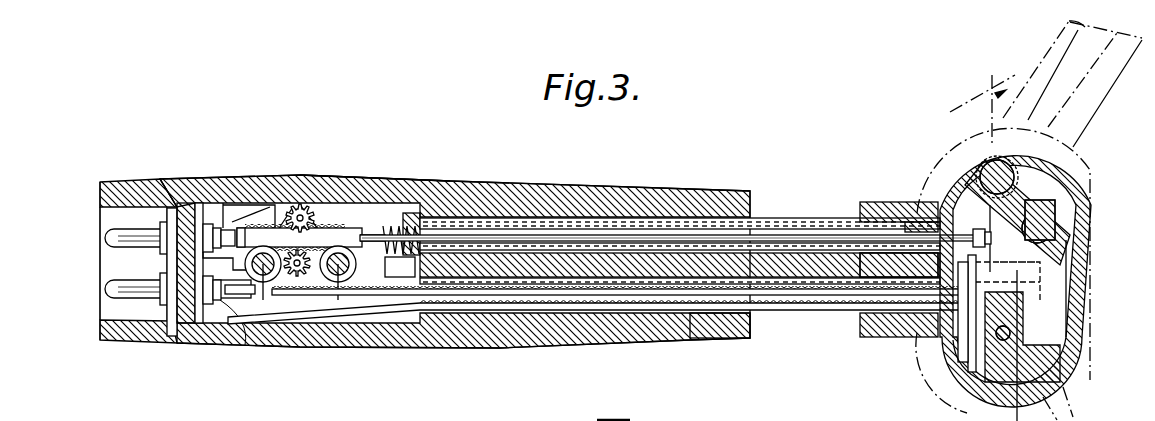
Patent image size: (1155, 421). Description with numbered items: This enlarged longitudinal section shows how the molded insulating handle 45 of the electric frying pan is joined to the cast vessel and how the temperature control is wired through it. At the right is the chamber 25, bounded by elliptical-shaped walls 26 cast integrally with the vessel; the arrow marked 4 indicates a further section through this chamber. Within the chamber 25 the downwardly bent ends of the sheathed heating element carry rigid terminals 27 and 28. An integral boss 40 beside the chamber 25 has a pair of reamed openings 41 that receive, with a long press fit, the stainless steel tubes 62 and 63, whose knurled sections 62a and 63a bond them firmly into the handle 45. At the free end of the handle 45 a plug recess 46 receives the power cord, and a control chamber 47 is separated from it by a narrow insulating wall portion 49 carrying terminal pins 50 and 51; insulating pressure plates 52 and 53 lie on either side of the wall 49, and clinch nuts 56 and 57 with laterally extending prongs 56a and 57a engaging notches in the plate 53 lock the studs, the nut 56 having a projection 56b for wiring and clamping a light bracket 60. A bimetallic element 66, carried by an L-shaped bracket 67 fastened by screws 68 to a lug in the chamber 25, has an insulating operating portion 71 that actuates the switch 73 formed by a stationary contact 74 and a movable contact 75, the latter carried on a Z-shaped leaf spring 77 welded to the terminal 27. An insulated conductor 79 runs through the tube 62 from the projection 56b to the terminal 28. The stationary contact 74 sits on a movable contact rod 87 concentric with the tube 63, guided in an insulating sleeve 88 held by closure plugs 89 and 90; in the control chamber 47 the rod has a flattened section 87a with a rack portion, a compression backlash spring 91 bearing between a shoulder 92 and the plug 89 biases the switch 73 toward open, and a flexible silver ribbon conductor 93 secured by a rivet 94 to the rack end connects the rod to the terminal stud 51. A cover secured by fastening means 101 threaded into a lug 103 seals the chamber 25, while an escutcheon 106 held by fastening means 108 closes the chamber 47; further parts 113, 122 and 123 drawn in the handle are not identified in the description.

The section line 4- 4 is at (1039, 84).
The chamber 25 is at (1062, 262).
The elliptical-shaped walls 26 is at (1080, 289).
The rigid terminal 27 is at (1001, 158).
The rigid terminal 28 is at (1052, 226).
The integral boss 40 is at (896, 204).
The reamed openings 41 is at (872, 214).
The handle 45 is at (480, 192).
The plug recess 46 is at (108, 212).
The control chamber 47 is at (363, 200).
The insulating wall portion 49 is at (183, 260).
The terminal pin 50 is at (110, 288).
The terminal pin 51 is at (110, 238).
The insulating pressure plate 52 is at (170, 300).
The insulating pressure plate 53 is at (187, 325).
The clinch nut 56 is at (200, 300).
The laterally extending prong 56a is at (175, 300).
The projection 56b is at (240, 300).
The clinch nut 57 is at (212, 235).
The laterally extending prong 57a is at (168, 227).
The light bracket 60 is at (249, 222).
The tubular member 62 is at (770, 317).
The knurled section 62a is at (600, 313).
The tubular member 63 is at (790, 243).
The knurled section 63a is at (603, 217).
The bimetallic element 66 is at (970, 332).
The L-shaped bracket 67 is at (977, 365).
The screw 68 is at (1058, 393).
The insulating operating portion 71 is at (977, 265).
The switch 73 is at (971, 227).
The stationary contact 74 is at (965, 268).
The movable contact 75 is at (991, 237).
The leaf spring 77 is at (1000, 238).
The conductor 79 is at (400, 271).
The contact rod 87 is at (816, 237).
The flattened section 87a is at (338, 222).
The insulating sleeve 88 is at (762, 222).
The insulated closure plug 89 is at (415, 224).
The insulated closure plug 90 is at (279, 226).
The backlash spring 91 is at (397, 222).
The shoulder 92 is at (313, 264).
The flexible conductor 93 is at (218, 230).
The rivet 94 is at (240, 228).
The fastening means 101 is at (1032, 200).
The lug 103 is at (1058, 172).
The escutcheon 106 is at (248, 295).
The fastening means 108 is at (329, 270).
The threaded rod 113 is at (620, 291).
The rack 122 is at (299, 238).
The pinion gear 123 is at (305, 214).